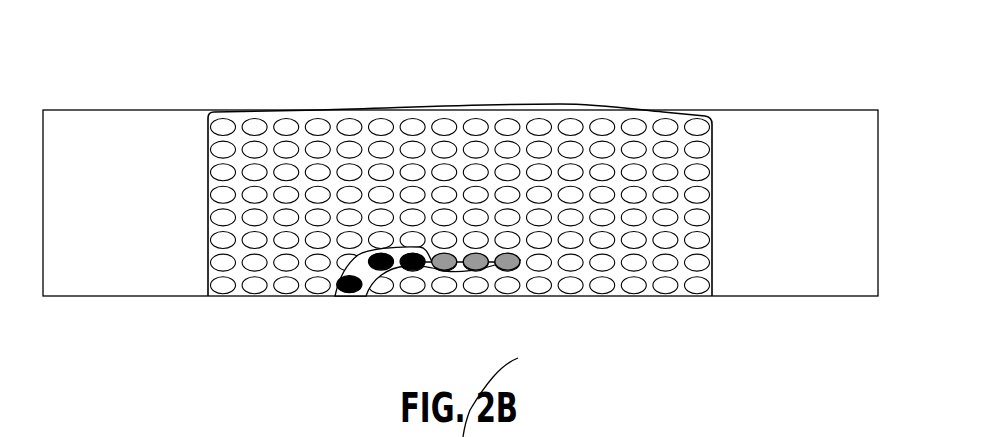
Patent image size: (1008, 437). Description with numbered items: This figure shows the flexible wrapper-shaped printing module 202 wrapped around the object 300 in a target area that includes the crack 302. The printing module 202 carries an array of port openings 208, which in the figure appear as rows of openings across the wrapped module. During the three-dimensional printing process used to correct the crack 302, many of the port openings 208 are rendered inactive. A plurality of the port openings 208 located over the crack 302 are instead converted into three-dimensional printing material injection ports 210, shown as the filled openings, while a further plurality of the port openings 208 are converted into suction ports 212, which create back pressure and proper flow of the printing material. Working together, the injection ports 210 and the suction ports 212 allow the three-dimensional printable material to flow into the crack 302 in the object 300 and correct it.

The object 300 is at (720, 110).
The flexible wrapper-shaped printing module 202 is at (602, 105).
The port openings 208 is at (385, 160).
The crack 302 is at (385, 270).
The 3D printing material injection ports 210 is at (379, 266).
The suction ports 212 is at (507, 272).